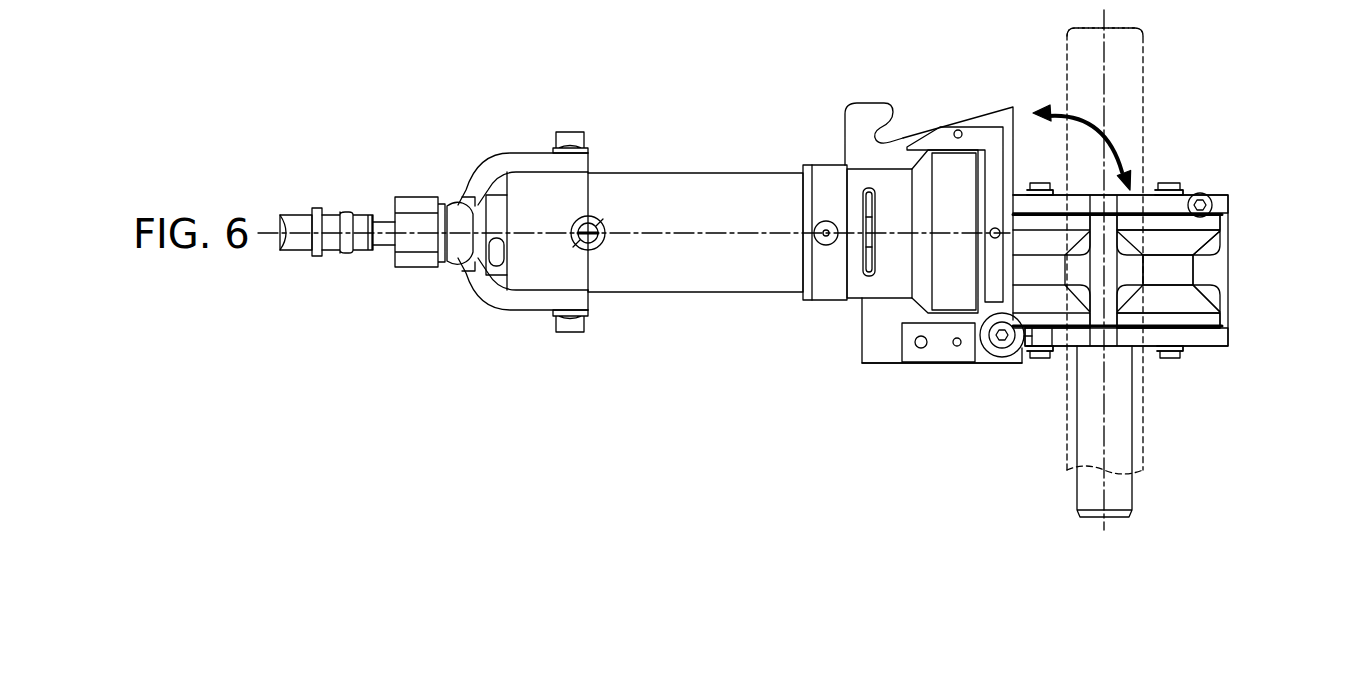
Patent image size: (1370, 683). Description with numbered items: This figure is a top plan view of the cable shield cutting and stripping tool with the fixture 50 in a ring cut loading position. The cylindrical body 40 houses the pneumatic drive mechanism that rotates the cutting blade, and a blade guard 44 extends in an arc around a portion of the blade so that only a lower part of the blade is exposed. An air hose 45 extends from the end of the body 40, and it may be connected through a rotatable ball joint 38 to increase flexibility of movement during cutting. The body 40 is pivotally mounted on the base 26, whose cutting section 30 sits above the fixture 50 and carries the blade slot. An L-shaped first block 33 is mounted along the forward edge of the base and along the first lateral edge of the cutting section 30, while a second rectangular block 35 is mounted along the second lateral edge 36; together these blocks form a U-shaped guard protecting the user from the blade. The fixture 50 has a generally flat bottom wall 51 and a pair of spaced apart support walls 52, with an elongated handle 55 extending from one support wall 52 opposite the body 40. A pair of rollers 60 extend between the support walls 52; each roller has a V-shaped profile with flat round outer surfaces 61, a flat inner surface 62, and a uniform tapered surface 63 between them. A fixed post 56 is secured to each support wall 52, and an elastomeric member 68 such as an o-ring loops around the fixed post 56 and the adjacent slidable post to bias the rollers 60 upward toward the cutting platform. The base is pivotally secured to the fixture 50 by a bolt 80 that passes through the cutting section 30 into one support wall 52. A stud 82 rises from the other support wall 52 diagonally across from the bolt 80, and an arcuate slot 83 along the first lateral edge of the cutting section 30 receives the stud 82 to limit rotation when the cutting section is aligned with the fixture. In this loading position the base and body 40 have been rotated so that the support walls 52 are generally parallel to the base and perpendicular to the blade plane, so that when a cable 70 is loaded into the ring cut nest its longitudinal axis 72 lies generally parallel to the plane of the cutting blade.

The clevis mount 26 is at (506, 167).
The cutting section 30 is at (873, 338).
The L-shaped first block 33 is at (980, 137).
The second rectangular block 35 is at (938, 348).
The second lateral edge 36 is at (887, 365).
The longitudinal axis 38 is at (466, 237).
The cylindrical body 40 is at (672, 164).
The blade guard 44 is at (970, 242).
The air hose 45 is at (293, 212).
The fixture 50 is at (1232, 125).
The bottom wall 51 is at (1135, 284).
The support walls 52 is at (1152, 203).
The elongated handle 55 is at (1132, 492).
The fixed post 56 is at (1040, 183).
The rollers 60 is at (1052, 256).
The outer surfaces 61 is at (1212, 224).
The inner surface 62 is at (1186, 270).
The tapered surface 63 is at (1200, 238).
The elastomeric member 68 is at (1027, 192).
The cable 70 is at (1143, 70).
The longitudinal axis 72 is at (1105, 22).
The bolt 80 is at (1006, 348).
The stud 82 is at (1213, 203).
The arcuate slot 83 is at (882, 135).